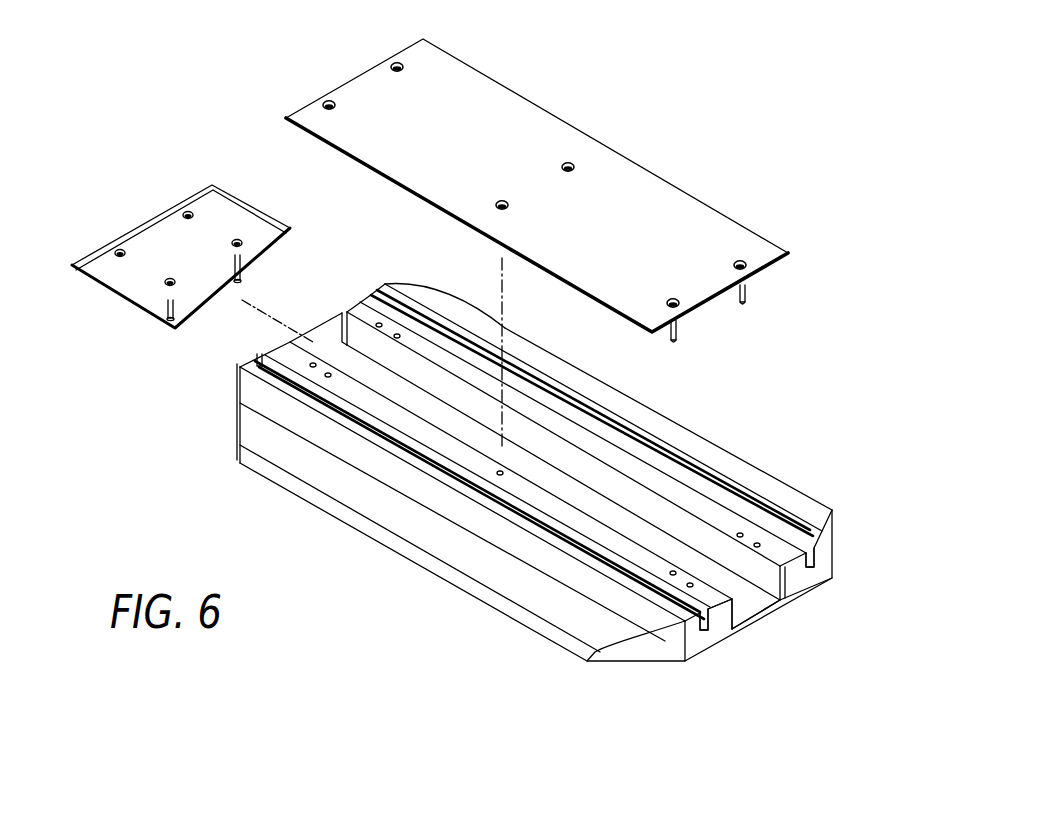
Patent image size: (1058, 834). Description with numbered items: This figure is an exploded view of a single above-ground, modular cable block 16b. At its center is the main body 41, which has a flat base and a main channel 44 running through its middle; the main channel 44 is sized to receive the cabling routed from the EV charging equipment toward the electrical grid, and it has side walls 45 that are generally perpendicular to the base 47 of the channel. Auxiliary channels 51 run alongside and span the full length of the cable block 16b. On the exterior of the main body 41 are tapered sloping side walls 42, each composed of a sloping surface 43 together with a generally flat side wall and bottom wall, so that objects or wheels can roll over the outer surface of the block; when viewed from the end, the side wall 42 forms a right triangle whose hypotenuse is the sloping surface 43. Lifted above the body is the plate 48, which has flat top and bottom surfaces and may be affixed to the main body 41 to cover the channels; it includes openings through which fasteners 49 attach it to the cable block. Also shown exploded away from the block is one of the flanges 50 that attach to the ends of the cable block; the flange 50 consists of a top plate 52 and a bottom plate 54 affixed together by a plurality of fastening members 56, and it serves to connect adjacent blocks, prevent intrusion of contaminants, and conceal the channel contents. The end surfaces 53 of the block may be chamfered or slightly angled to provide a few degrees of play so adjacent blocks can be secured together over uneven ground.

The cable block 16b is at (150, 410).
The main body 41 is at (542, 511).
The sloping side walls 42 is at (640, 650).
The sloping surface 43 is at (505, 568).
The main channel 44 is at (755, 603).
The side walls of the main channel 45 is at (695, 530).
The base of the channel 47 is at (710, 567).
The plate 48 is at (520, 137).
The fasteners 49 is at (747, 296).
The flanges 50 is at (197, 231).
The auxiliary channels 51 is at (263, 356).
The top plate 52 is at (200, 255).
The end surfaces 53 is at (718, 622).
The bottom plate 54 is at (204, 292).
The fastening members 56 is at (241, 267).